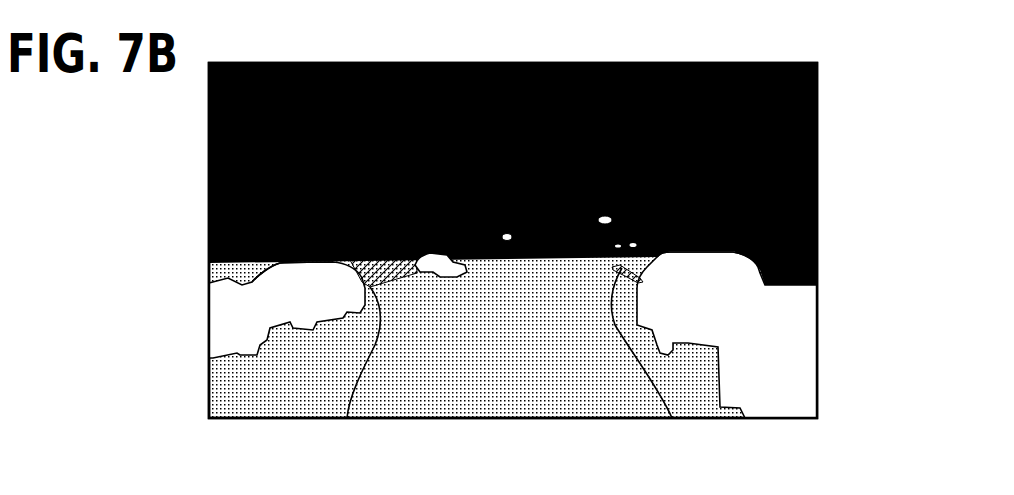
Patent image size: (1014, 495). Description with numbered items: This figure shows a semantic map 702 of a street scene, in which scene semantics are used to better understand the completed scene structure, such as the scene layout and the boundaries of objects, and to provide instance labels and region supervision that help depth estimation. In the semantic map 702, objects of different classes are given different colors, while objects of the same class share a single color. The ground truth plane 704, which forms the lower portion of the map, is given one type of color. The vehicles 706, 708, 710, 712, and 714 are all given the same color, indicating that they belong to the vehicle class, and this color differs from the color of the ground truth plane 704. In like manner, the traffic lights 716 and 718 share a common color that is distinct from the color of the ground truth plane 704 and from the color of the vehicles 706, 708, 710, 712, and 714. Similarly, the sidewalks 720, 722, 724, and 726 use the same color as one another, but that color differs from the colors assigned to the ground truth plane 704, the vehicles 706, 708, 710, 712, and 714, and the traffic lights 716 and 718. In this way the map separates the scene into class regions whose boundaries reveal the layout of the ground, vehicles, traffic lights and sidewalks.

The semantic map 702 is at (818, 127).
The ground truth plane 704 is at (209, 390).
The vehicle 706 is at (223, 308).
The vehicle 708 is at (287, 268).
The vehicle 710 is at (792, 373).
The vehicle 712 is at (737, 262).
The vehicle 714 is at (430, 255).
The traffic light 716 is at (612, 220).
The traffic light 718 is at (505, 235).
The sidewalk 720 is at (672, 418).
The sidewalk 722 is at (347, 418).
The sidewalk 724 is at (353, 258).
The sidewalk 726 is at (658, 247).